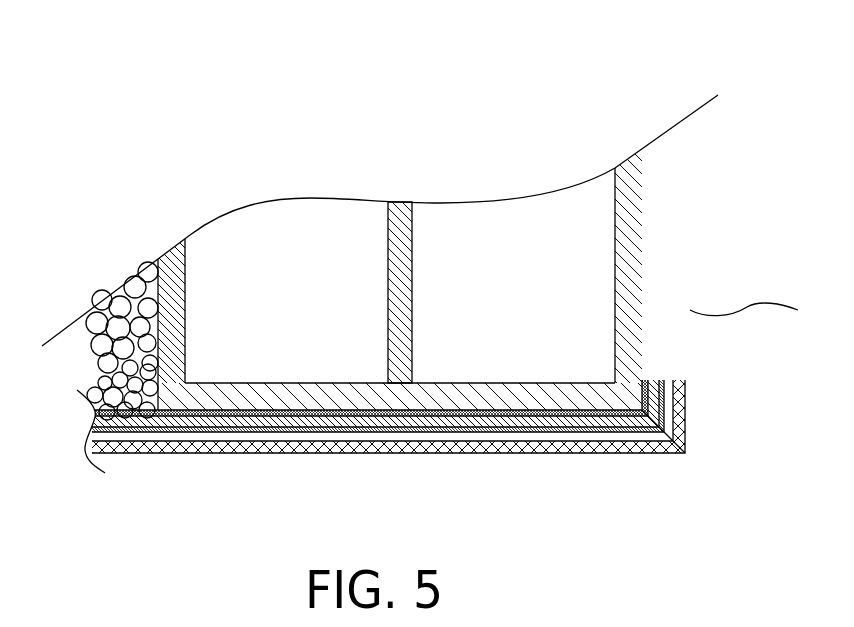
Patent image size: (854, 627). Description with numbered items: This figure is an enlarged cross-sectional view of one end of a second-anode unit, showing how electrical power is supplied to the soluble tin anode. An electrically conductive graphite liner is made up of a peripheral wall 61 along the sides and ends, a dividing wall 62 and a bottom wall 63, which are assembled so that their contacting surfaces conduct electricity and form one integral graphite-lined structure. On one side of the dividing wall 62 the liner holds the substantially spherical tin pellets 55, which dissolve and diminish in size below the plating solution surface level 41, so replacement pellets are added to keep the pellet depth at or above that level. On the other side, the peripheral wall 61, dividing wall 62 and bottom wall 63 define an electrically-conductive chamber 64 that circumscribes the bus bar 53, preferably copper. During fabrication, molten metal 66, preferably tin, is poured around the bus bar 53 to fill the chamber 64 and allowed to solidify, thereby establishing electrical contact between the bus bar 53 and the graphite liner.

The plating solution surface level 41 is at (740, 310).
The bus bar 53 is at (388, 298).
The tin pellets 55 is at (130, 282).
The peripheral wall 61 is at (617, 265).
The dividing wall 62 is at (185, 318).
The bottom wall 63 is at (302, 383).
The electrically-conductive chamber 64 is at (370, 147).
The molten metal 66 is at (400, 328).